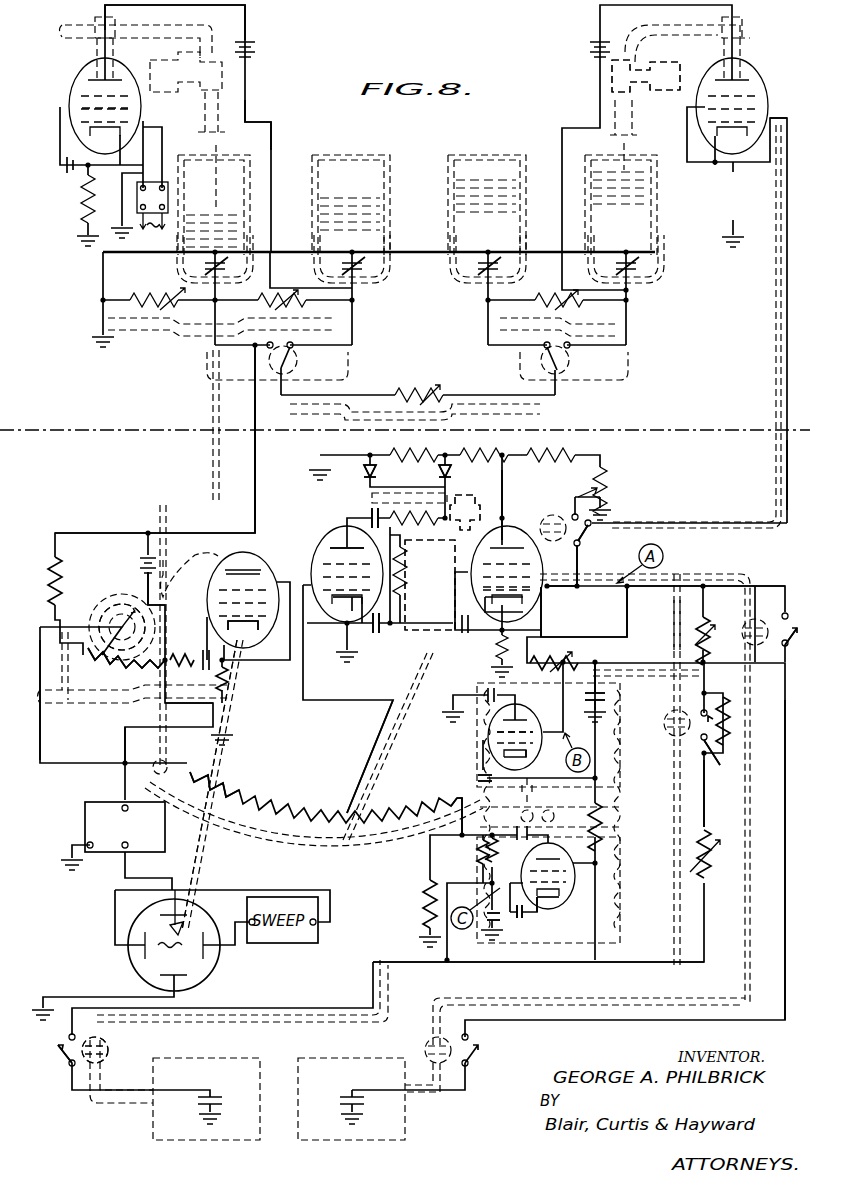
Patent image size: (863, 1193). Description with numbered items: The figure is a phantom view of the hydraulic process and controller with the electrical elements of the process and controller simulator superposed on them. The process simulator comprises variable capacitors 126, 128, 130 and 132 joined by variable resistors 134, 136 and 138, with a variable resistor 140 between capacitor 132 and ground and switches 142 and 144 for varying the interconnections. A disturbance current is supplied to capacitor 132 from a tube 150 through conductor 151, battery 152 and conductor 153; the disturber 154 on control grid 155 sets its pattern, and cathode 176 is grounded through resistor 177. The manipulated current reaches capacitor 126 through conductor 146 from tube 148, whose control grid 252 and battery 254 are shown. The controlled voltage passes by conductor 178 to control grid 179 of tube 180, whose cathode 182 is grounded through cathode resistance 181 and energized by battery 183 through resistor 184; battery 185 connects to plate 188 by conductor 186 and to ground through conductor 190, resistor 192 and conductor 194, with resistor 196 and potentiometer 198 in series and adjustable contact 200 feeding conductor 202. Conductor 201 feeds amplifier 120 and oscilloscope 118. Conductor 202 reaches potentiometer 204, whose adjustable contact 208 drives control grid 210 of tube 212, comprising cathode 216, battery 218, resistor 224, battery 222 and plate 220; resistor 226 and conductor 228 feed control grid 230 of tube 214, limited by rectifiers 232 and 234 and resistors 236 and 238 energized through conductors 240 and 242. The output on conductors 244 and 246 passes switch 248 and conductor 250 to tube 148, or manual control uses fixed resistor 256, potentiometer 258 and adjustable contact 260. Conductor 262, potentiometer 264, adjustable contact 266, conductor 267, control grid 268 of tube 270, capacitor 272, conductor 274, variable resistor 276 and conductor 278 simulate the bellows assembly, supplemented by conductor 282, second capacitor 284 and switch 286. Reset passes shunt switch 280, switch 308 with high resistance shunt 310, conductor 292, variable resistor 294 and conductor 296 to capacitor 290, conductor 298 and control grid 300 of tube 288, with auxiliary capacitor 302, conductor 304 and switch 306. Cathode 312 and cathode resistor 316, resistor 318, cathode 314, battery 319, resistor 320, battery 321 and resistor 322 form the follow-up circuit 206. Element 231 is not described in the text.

The tube 150 is at (68, 75).
The conductor 153 is at (247, 16).
The battery 152 is at (258, 51).
The conductor 151 is at (271, 129).
The control grid 155 is at (115, 118).
The cathode 176 is at (90, 130).
The resistor 177 is at (74, 196).
The disturber 154 is at (164, 185).
The battery 254 is at (597, 52).
The conductor 146 is at (597, 95).
The electronic tube 148 is at (748, 62).
The control grid 252 is at (750, 118).
The variable resistor 140 is at (147, 290).
The variable capacitor 132 is at (205, 266).
The resistor 138 is at (283, 299).
The variable capacitor 130 is at (363, 264).
The variable capacitor 128 is at (482, 265).
The resistor 134 is at (562, 302).
The variable capacitor 126 is at (632, 273).
The switch 144 is at (294, 373).
The switch 142 is at (562, 373).
The resistor 136 is at (415, 394).
The conductor 178 is at (258, 447).
The rectifier 234 is at (367, 468).
The resistor 236 is at (394, 456).
The resistor 238 is at (484, 456).
The fixed resistor 256 is at (560, 457).
The rectifier 232 is at (449, 472).
The conductor 242 is at (504, 472).
The potentiometer 258 is at (604, 479).
The adjustable contact 260 is at (590, 495).
The conductor 250 is at (787, 454).
The battery 222 is at (372, 513).
The resistor 226 is at (400, 512).
The pentode tube 212 is at (325, 524).
The plate 220 is at (346, 545).
The tube 214 is at (517, 525).
The conductor 228 is at (447, 537).
The resistor 224 is at (404, 566).
The conductor 246 is at (580, 558).
The switch 248 is at (591, 538).
The conductor 244 is at (570, 590).
The conductor 278 is at (692, 585).
The shunt switch 280 is at (785, 612).
The variable resistor 276 is at (708, 625).
The conductor 262 is at (577, 637).
The potentiometer 264 is at (566, 659).
The conductor 274 is at (645, 662).
The control grid 230 is at (507, 603).
The resistor 231 is at (496, 650).
The cathode 216 is at (343, 628).
The control grid 210 is at (352, 612).
The battery 218 is at (376, 636).
The conductor 240 is at (430, 622).
The conductor 186 is at (195, 533).
The battery 185 is at (147, 560).
The conductor 190 is at (148, 578).
The resistor 196 is at (60, 576).
The adjustable contact 200 is at (103, 640).
The plate 188 is at (243, 568).
The tube 180 is at (277, 562).
The battery 183 is at (203, 645).
The resistor 184 is at (185, 657).
The control grid 179 is at (237, 628).
The cathode 182 is at (250, 634).
The cathode resistance 181 is at (226, 690).
The potentiometer 198 is at (100, 668).
The resistor 192 is at (163, 680).
The conductor 194 is at (193, 707).
The conductor 202 is at (42, 726).
The conductor 201 is at (123, 748).
The amplifier 120 is at (85, 808).
The potentiometer 204 is at (272, 803).
The adjustable contact 208 is at (347, 806).
The follow-up circuit 206 is at (462, 793).
The oscilloscope 118 is at (128, 965).
The resistor 322 is at (425, 890).
The adjustable contact 266 is at (557, 676).
The tube 270 is at (555, 701).
The capacitor 272 is at (612, 697).
The control grid 268 is at (488, 745).
The cathode 312 is at (485, 769).
The conductor 267 is at (548, 752).
The cathode resistor 316 is at (523, 800).
The resistor 318 is at (602, 820).
The resistor 320 is at (481, 853).
The conductor 298 is at (516, 878).
The battery 321 is at (560, 838).
The tube 288 is at (586, 886).
The control grid 300 is at (555, 893).
The capacitor 290 is at (500, 918).
The cathode 314 is at (530, 912).
The battery 319 is at (553, 935).
The conductor 296 is at (640, 961).
The high resistance shunt 310 is at (728, 710).
The switch 308 is at (722, 749).
The conductor 292 is at (705, 808).
The variable resistor 294 is at (716, 858).
The conductor 282 is at (789, 750).
The switch 306 is at (68, 1058).
The conductor 304 is at (126, 1088).
The auxiliary capacitor 302 is at (213, 1096).
The second capacitor 284 is at (350, 1098).
The switch 286 is at (472, 1056).